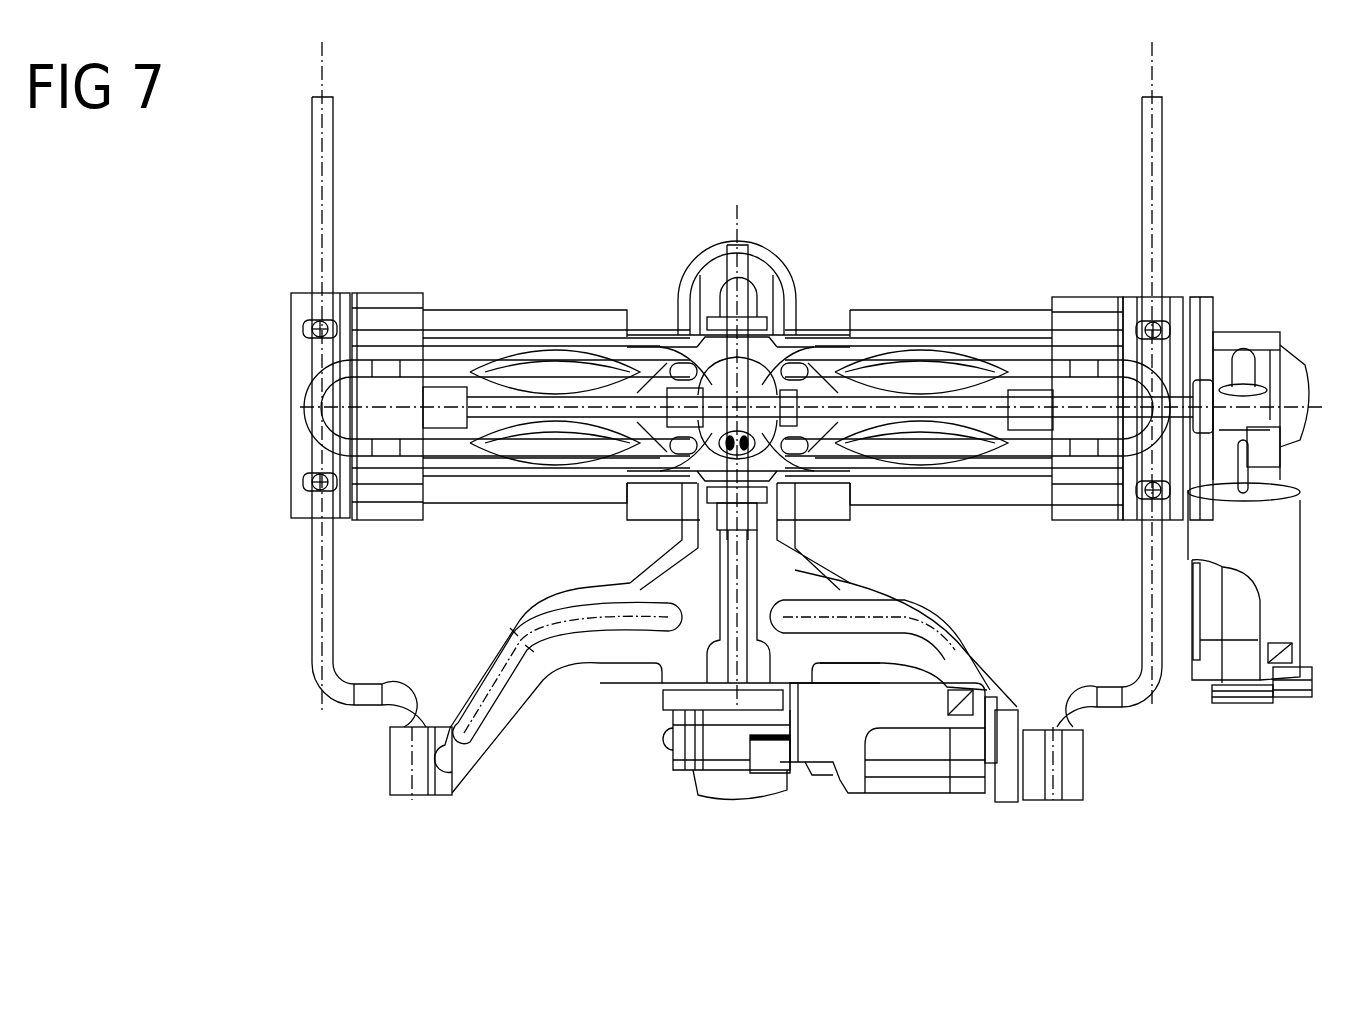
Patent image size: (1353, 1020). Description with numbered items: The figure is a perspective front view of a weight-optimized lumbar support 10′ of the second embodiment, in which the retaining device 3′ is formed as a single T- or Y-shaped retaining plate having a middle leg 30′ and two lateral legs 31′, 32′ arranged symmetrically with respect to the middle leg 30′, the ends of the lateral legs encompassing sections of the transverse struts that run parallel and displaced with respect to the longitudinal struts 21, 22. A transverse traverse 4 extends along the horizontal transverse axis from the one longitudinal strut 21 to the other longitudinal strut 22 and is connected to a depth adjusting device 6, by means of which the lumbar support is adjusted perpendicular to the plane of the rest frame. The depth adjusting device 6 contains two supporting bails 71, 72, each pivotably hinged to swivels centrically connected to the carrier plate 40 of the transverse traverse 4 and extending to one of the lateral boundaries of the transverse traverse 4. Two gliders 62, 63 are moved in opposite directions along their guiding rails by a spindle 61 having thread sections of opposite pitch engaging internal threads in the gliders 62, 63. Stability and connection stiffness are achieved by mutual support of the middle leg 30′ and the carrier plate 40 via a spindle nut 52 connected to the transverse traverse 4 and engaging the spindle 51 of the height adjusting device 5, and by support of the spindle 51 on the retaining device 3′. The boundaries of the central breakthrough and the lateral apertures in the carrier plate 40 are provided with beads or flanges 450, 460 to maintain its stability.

The lumbar support 10′ is at (558, 144).
The longitudinal strut 21 is at (316, 612).
The longitudinal strut 22 is at (1155, 225).
The glider 62 is at (380, 322).
The glider 63 is at (1097, 327).
The carrier plate 40 is at (503, 320).
The spindle 61 is at (614, 403).
The depth adjusting device 6 is at (968, 388).
The bead or flange 460 is at (986, 462).
The supporting bail 71 is at (387, 447).
The supporting bail 72 is at (1026, 452).
The transverse traverse 4 is at (1023, 311).
The bead or flange 450 is at (820, 387).
The retaining device 3′ is at (660, 516).
The spindle nut 52 is at (726, 514).
The middle leg 30′ is at (798, 527).
The lateral leg 31′ is at (487, 672).
The lateral leg 32′ is at (956, 622).
The height adjusting device 5 is at (654, 701).
The spindle 51 is at (735, 660).